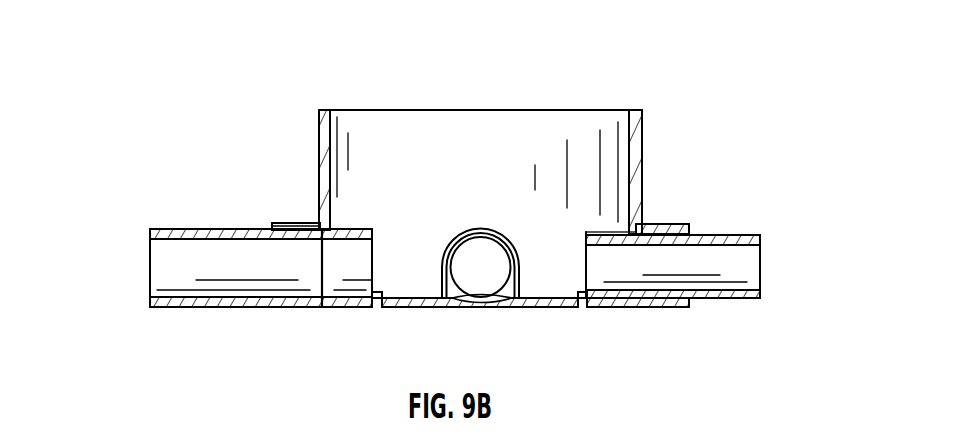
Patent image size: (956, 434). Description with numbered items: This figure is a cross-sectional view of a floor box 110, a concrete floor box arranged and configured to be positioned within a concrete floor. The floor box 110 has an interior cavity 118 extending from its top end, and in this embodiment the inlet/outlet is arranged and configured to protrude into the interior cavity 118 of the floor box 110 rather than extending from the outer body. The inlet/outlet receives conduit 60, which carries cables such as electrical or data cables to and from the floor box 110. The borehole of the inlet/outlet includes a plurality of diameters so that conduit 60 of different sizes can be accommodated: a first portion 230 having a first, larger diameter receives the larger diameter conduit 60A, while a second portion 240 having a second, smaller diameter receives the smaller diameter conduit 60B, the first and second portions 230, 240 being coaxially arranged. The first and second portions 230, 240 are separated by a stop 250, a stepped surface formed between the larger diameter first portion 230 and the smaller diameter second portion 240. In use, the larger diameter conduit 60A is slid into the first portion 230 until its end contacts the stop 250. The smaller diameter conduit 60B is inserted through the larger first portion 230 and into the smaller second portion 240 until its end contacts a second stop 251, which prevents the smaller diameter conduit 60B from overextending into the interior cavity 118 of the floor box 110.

The floor box 110 is at (643, 130).
The interior cavity 118 is at (469, 124).
The conduit 60 is at (449, 247).
The larger diameter conduit 60A is at (157, 223).
The smaller diameter conduit 60B is at (735, 231).
The first portion 230 is at (663, 224).
The second portion 240 is at (353, 228).
The stop 250 is at (328, 313).
The second stop 251 is at (383, 291).